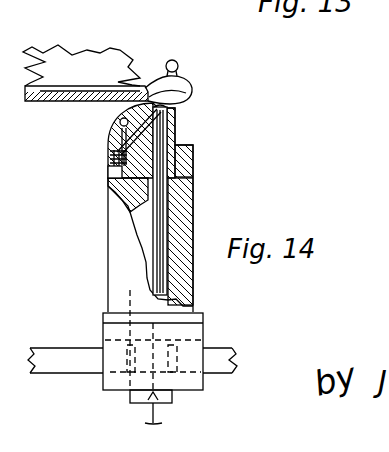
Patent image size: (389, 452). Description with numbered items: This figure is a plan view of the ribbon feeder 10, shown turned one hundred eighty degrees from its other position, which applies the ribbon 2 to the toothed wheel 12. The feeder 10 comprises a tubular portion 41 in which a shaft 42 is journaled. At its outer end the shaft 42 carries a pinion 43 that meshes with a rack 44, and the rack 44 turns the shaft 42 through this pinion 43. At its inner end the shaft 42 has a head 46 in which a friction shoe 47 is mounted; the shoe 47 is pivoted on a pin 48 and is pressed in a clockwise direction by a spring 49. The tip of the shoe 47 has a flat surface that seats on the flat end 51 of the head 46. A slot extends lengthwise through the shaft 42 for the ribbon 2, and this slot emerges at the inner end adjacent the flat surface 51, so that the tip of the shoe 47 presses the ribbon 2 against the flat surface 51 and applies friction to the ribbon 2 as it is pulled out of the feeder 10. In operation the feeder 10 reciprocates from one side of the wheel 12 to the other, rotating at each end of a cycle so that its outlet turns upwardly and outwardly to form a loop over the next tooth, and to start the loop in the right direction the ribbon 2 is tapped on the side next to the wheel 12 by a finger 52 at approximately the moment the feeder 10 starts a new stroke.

The ribbon feeder 10 is at (82, 290).
The toothed wheel 12 is at (82, 55).
The ribbon 2 is at (183, 86).
The tubular portion 41 is at (190, 224).
The shaft 42 is at (158, 280).
The pinion 43 is at (177, 372).
The rack 44 is at (215, 348).
The head 46 is at (193, 166).
The friction shoe 47 is at (112, 123).
The pin 48 is at (117, 140).
The spring 49 is at (110, 168).
The flat end 51 is at (172, 111).
The finger 52 is at (174, 60).